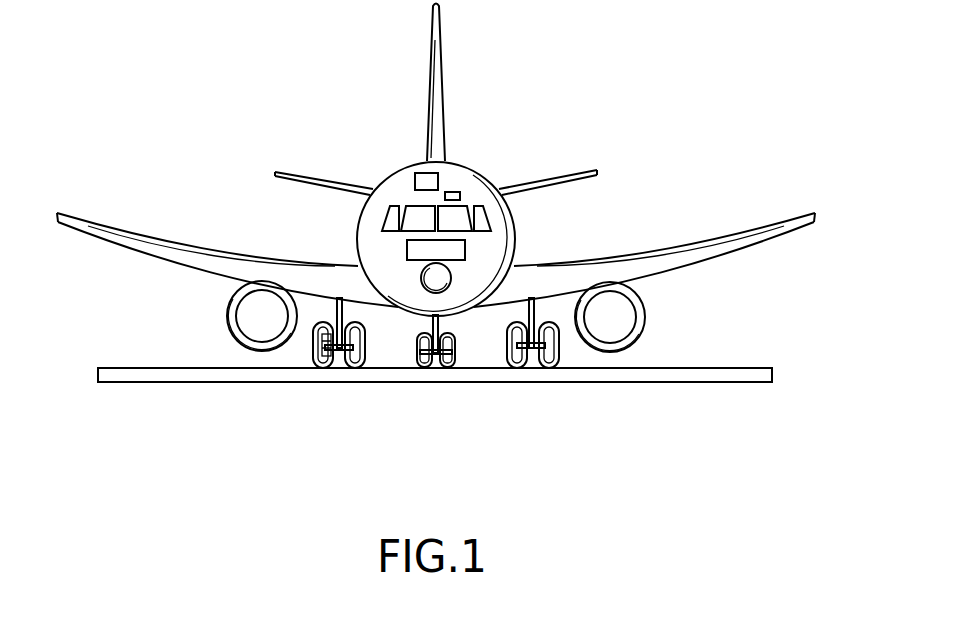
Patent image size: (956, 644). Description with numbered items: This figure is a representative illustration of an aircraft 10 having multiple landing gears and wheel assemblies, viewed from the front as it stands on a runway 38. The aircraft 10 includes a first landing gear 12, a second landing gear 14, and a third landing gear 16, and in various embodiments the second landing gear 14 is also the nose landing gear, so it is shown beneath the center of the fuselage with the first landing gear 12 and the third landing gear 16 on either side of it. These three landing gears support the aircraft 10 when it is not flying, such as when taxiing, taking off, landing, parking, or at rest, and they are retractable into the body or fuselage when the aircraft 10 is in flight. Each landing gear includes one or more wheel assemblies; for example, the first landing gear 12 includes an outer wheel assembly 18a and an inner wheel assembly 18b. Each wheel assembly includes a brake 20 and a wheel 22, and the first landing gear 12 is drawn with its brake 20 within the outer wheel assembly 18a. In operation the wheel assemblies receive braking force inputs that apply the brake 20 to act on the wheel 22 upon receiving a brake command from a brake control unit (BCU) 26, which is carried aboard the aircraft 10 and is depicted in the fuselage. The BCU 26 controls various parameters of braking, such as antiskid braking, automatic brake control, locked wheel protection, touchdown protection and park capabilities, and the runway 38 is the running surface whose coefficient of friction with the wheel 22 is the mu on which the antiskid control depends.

The aircraft 10 is at (436, 243).
The first landing gear 12 is at (297, 389).
The second landing gear 14 is at (409, 357).
The third landing gear 16 is at (498, 352).
The outer wheel assembly 18a is at (314, 361).
The inner wheel assembly 18b is at (354, 361).
The brake 20 is at (325, 361).
The wheel 22 is at (372, 350).
The brake control unit (BCU) 26 is at (466, 250).
The runway 38 is at (752, 376).